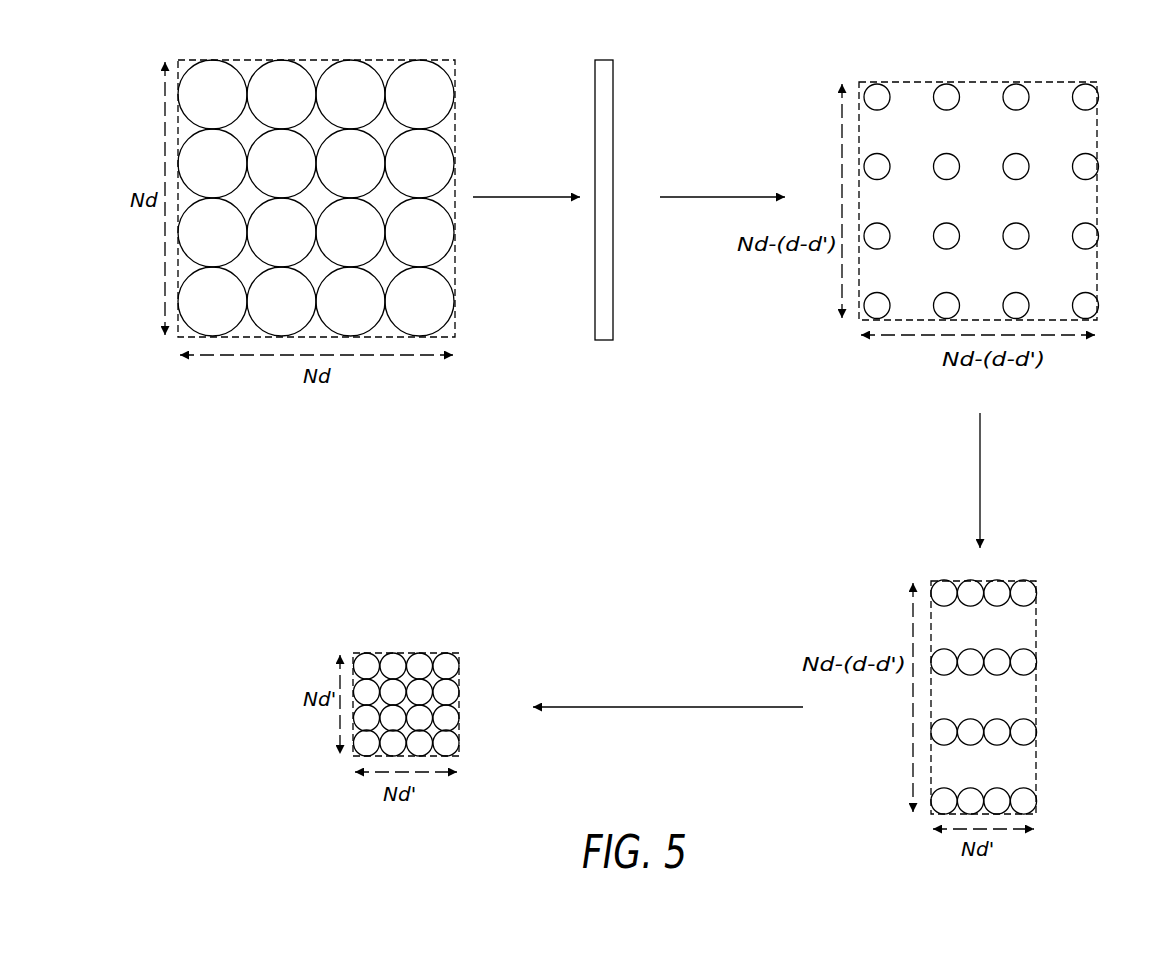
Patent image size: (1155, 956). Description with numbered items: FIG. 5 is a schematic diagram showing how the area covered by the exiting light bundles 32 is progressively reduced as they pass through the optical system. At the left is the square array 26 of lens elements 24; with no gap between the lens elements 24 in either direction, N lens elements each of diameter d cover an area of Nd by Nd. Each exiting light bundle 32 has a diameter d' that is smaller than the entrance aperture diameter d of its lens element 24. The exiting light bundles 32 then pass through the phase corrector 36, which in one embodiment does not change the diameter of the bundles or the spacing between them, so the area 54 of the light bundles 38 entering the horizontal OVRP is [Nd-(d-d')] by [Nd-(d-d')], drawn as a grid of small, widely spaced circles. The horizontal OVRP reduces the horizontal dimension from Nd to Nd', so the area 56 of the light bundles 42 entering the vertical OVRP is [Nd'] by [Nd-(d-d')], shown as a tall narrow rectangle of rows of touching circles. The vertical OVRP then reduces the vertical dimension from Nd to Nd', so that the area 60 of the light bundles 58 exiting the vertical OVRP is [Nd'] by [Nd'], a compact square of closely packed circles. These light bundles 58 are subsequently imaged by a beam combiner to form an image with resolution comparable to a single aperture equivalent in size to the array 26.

The lens element 24 is at (423, 80).
The square array of lens elements 26 is at (316, 59).
The exiting light bundles 32 is at (558, 195).
The phase corrector 36 is at (613, 308).
The light bundles entering the horizontal OVRP 38 is at (703, 196).
The light bundles entering the vertical OVRP 42 is at (982, 475).
The area of the light bundles entering the horizontal OVRP 54 is at (986, 81).
The area of the light bundles entering the vertical OVRP 56 is at (950, 580).
The light bundles exiting the vertical OVRP 58 is at (663, 705).
The area of the light bundles exiting the vertical OVRP 60 is at (407, 650).